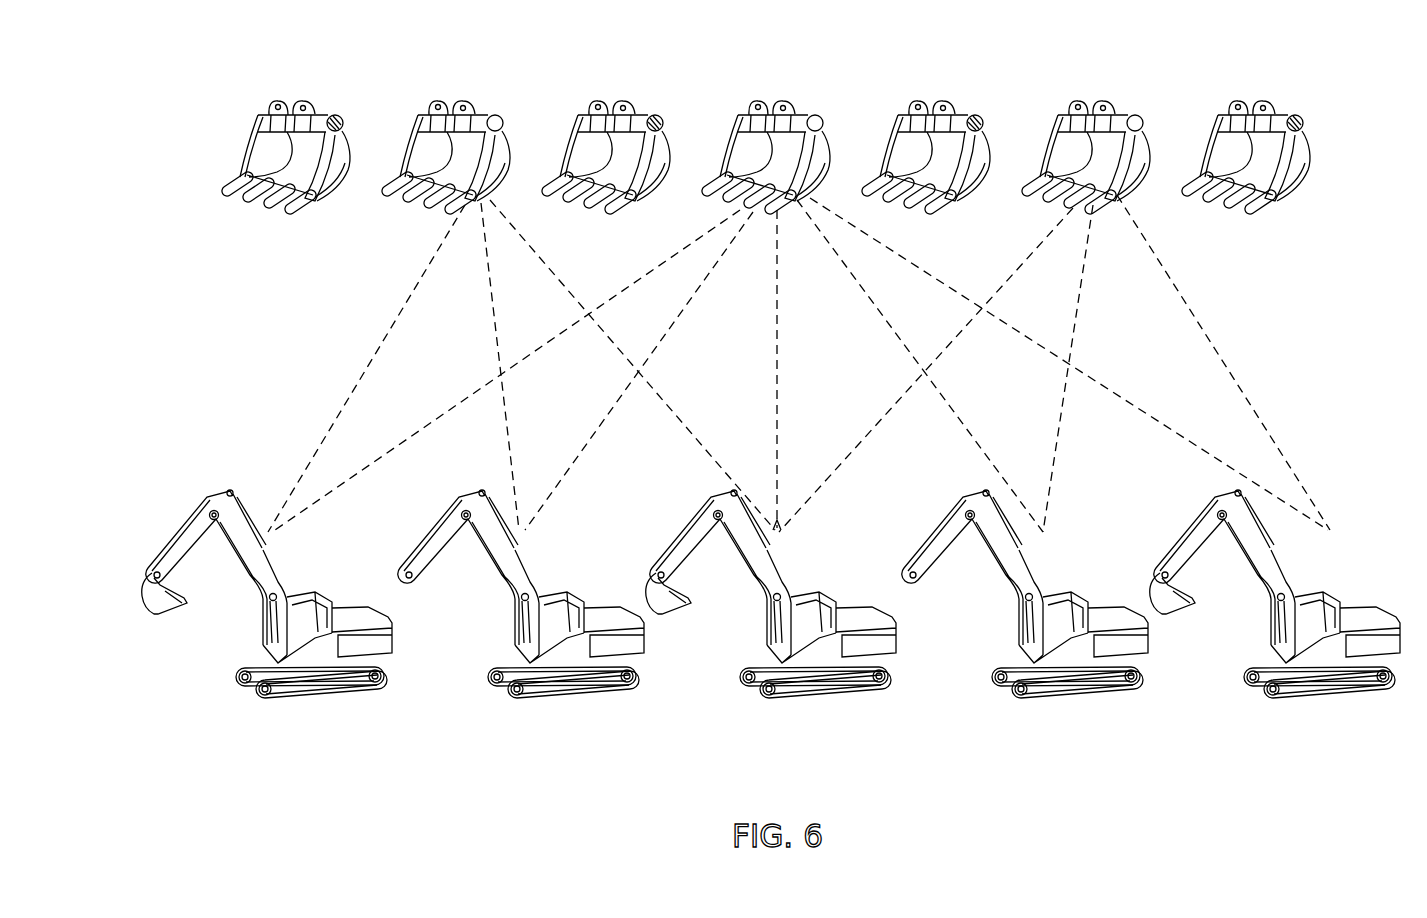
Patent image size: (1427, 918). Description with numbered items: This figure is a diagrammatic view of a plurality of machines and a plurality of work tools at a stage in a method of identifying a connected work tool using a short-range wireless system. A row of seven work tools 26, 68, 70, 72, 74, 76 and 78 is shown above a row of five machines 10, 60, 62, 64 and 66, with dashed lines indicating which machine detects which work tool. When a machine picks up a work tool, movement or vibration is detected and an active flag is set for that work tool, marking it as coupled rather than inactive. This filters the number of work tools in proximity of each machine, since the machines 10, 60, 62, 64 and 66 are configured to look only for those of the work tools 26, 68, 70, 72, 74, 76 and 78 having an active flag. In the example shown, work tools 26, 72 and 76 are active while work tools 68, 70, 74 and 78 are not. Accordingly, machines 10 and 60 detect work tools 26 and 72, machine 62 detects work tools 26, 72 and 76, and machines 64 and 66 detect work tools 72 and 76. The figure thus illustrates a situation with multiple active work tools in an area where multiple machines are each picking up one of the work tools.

The machine 10 is at (180, 675).
The work tool 26 is at (483, 112).
The machine 60 is at (522, 720).
The machine 62 is at (843, 717).
The machine 64 is at (1077, 715).
The machine 66 is at (1356, 718).
The work tool 68 is at (318, 112).
The work tool 70 is at (636, 112).
The work tool 72 is at (798, 112).
The work tool 74 is at (956, 112).
The work tool 76 is at (1113, 112).
The work tool 78 is at (1277, 112).